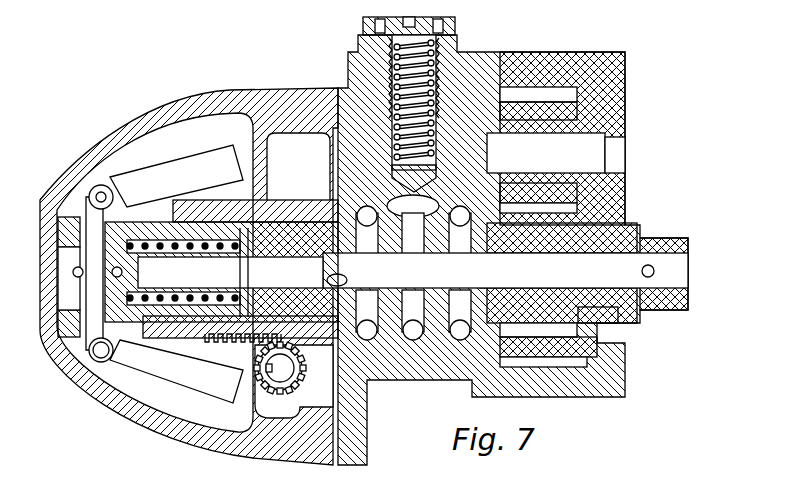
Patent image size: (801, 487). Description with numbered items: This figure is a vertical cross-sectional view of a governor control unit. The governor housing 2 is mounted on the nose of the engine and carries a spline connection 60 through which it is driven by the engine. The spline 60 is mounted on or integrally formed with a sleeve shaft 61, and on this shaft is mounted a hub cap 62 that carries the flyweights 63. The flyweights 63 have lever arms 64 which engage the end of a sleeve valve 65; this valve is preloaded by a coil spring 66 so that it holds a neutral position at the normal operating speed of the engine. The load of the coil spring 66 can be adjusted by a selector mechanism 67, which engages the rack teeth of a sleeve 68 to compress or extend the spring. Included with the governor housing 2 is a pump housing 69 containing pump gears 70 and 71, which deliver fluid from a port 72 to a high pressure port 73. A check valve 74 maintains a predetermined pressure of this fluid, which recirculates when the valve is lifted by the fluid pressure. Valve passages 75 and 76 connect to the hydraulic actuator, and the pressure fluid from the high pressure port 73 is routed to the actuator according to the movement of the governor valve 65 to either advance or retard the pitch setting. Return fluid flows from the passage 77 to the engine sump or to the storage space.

The governor housing 2 is at (232, 89).
The spline connection 60 is at (670, 240).
The sleeve shaft 61 is at (151, 242).
The hub cap 62 is at (74, 215).
The flyweights 63 is at (183, 160).
The lever arms 64 is at (57, 256).
The sleeve valve 65 is at (372, 258).
The coil spring 66 is at (184, 292).
The selector mechanism 67 is at (298, 385).
The sleeve 68 is at (208, 343).
The pump housing 69 is at (620, 110).
The pump gear 70 is at (577, 95).
The pump gear 71 is at (585, 210).
The port 72 is at (625, 158).
The high pressure port 73 is at (413, 206).
The check valve 74 is at (436, 190).
The valve passage 75 is at (380, 345).
The valve passage 76 is at (460, 342).
The passage 77 is at (552, 364).